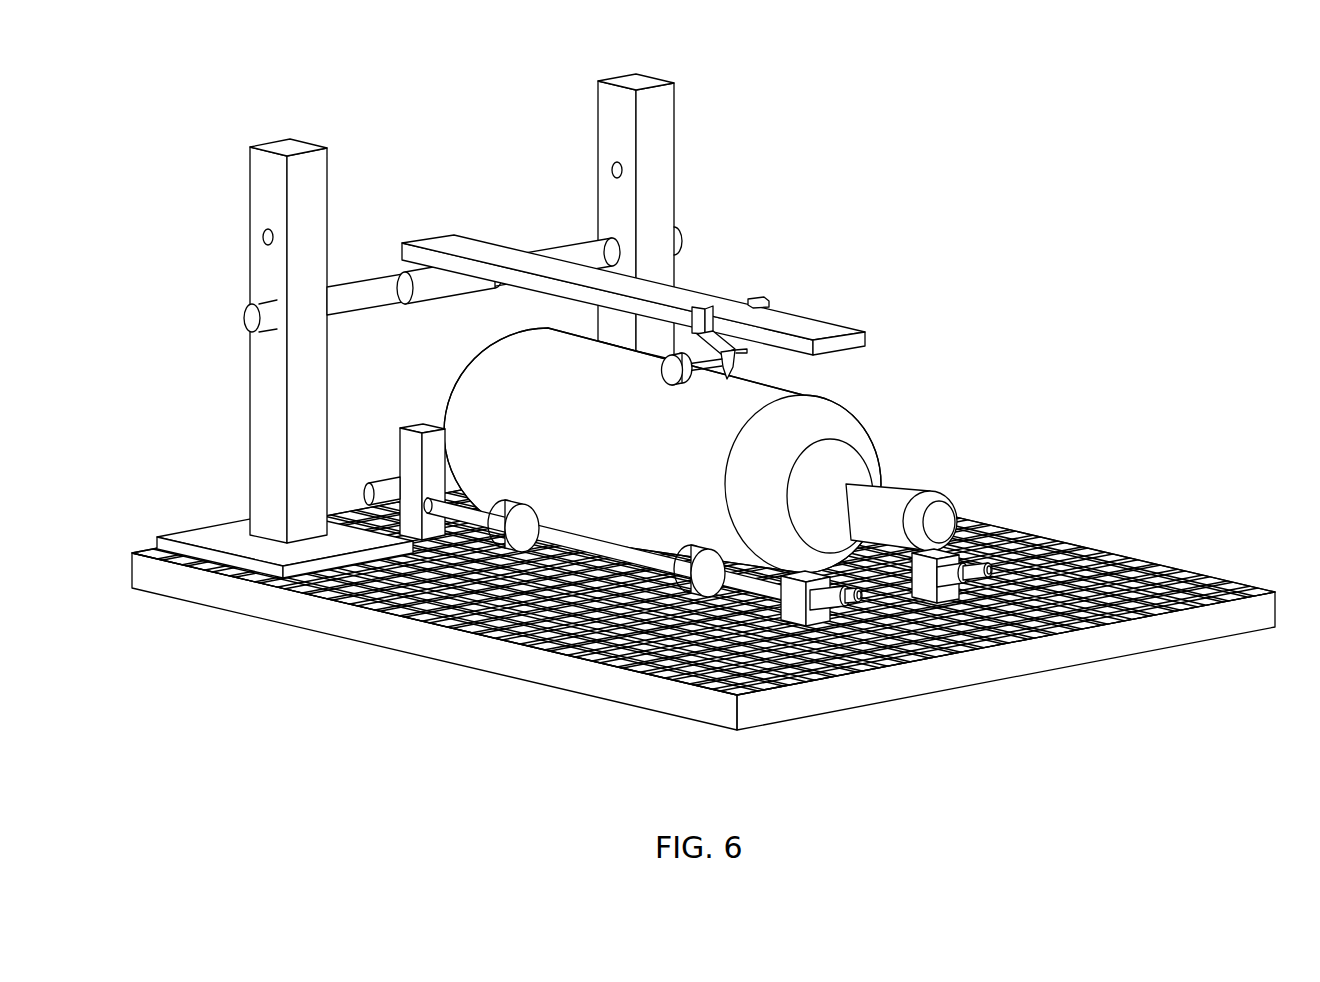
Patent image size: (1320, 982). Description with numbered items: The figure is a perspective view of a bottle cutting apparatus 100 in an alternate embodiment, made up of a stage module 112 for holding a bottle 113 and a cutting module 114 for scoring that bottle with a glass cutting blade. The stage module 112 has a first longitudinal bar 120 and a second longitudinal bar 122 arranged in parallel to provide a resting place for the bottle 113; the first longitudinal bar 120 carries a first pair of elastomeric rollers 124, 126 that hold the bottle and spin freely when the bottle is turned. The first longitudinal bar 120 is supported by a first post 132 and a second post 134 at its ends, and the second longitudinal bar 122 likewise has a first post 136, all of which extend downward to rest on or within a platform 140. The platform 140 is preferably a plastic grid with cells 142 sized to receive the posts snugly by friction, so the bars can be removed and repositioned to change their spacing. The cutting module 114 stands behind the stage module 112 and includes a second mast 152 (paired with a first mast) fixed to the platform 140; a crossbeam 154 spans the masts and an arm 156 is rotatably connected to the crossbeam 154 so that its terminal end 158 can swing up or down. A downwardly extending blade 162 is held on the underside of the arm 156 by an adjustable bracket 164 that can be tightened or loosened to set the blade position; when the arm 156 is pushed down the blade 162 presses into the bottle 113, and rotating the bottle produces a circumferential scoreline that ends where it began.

The bottle cutting apparatus 100 is at (198, 287).
The stage module 112 is at (703, 590).
The bottle 113 is at (887, 495).
The cutting module 114 is at (554, 308).
The first longitudinal bar 120 is at (604, 545).
The second longitudinal bar 122 is at (1118, 618).
The roller 124 is at (530, 513).
The roller 126 is at (697, 557).
The first post 132 is at (810, 612).
The second post 134 is at (402, 470).
The first post 136 is at (1040, 540).
The platform 140 is at (1053, 623).
The cells 142 is at (1047, 632).
The second mast 152 is at (655, 113).
The crossbeam 154 is at (358, 297).
The arm 156 is at (782, 318).
The terminal end 158 is at (865, 335).
The blade 162 is at (724, 385).
The adjustable bracket 164 is at (747, 350).